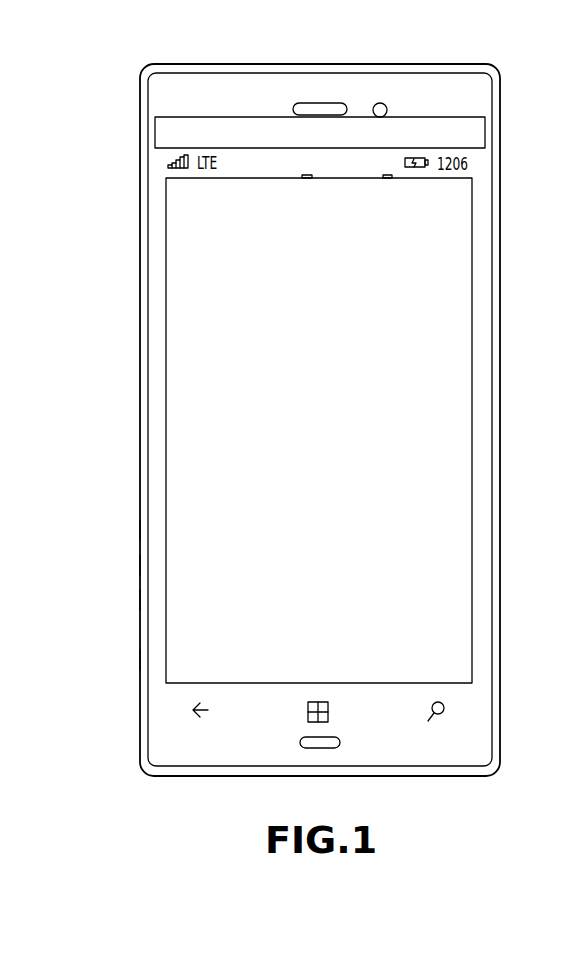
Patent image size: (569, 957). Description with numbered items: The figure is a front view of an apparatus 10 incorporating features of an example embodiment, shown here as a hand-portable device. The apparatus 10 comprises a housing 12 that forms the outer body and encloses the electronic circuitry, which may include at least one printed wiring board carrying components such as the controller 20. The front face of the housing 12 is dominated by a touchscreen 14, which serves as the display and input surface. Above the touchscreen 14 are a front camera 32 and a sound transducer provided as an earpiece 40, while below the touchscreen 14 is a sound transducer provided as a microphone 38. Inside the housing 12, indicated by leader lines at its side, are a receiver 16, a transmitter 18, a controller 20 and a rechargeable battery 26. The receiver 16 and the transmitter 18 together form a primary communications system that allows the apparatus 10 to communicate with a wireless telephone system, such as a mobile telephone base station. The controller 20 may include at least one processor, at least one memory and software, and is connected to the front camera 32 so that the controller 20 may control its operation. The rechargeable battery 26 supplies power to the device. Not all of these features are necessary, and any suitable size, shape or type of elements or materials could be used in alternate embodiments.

The apparatus 10 is at (100, 131).
The housing 12 is at (139, 356).
The touchscreen 14 is at (200, 481).
The receiver 16 is at (137, 528).
The transmitter 18 is at (137, 562).
The controller 20 is at (137, 596).
The rechargeable battery 26 is at (137, 658).
The front camera 32 is at (385, 106).
The microphone 38 is at (323, 748).
The earpiece 40 is at (312, 104).